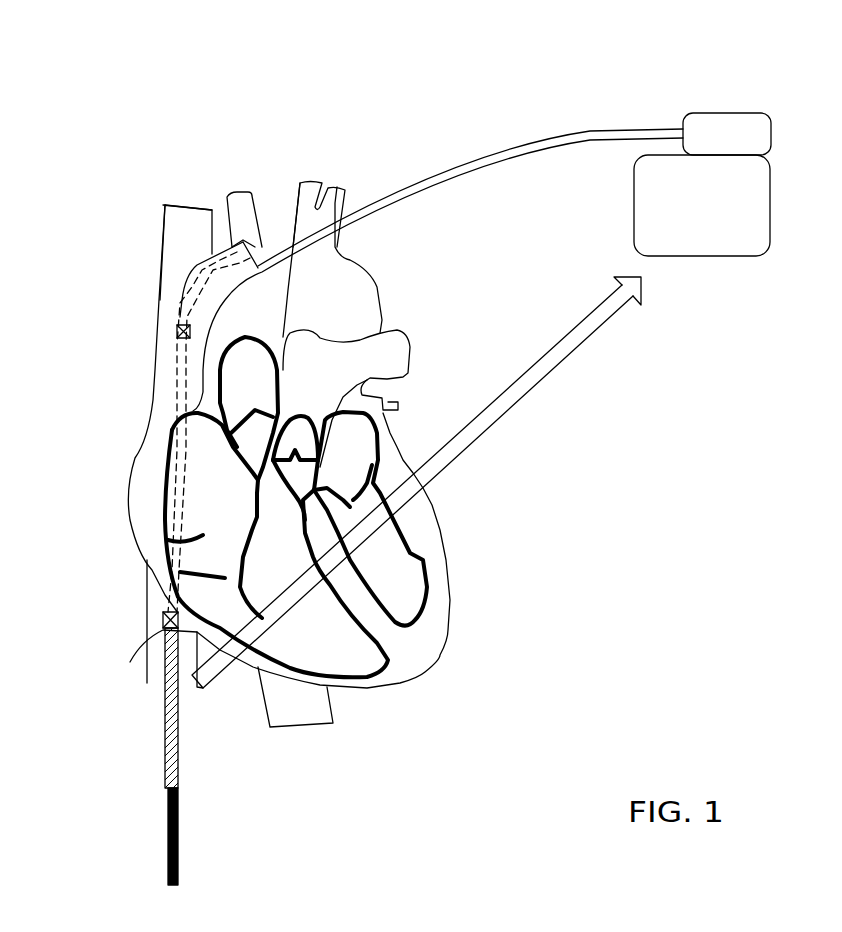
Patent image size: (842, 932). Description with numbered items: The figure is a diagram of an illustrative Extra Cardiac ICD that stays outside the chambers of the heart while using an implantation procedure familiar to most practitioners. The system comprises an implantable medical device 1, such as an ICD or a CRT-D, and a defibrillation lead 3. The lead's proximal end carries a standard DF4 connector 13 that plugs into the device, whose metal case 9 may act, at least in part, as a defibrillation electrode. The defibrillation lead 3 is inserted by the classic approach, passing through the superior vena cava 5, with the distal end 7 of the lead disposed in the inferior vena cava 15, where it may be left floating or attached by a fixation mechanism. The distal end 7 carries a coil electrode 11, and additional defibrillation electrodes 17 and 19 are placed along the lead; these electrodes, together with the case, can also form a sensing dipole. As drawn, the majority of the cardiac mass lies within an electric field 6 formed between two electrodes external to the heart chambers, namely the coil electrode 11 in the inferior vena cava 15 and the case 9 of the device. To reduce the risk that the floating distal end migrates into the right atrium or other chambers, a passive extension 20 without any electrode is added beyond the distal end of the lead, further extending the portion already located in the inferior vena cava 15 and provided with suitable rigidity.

The implantable medical device 1 is at (668, 188).
The defibrillation lead 3 is at (619, 127).
The superior vena cava 5 is at (160, 285).
The electric field 6 is at (530, 390).
The distal end 7 is at (206, 774).
The metal case 9 is at (634, 222).
The coil electrode 11 is at (178, 722).
The DF4 connector 13 is at (707, 113).
The inferior vena cava 15 is at (130, 662).
The defibrillation electrode 17 is at (177, 328).
The defibrillation electrode 19 is at (163, 613).
The passive extension 20 is at (175, 850).